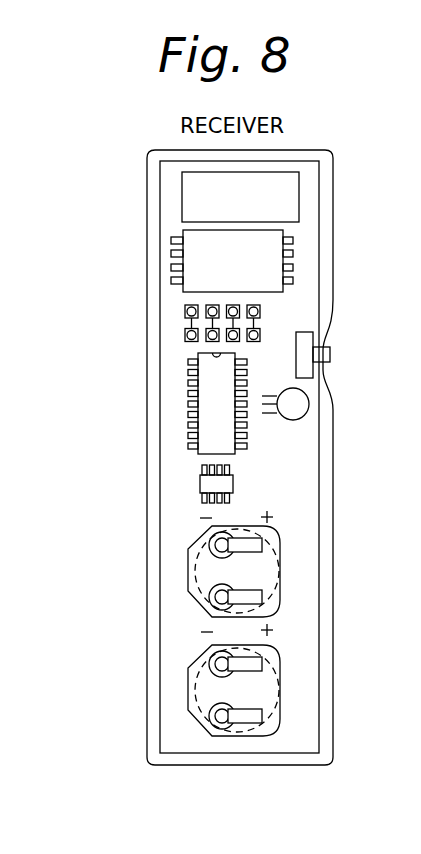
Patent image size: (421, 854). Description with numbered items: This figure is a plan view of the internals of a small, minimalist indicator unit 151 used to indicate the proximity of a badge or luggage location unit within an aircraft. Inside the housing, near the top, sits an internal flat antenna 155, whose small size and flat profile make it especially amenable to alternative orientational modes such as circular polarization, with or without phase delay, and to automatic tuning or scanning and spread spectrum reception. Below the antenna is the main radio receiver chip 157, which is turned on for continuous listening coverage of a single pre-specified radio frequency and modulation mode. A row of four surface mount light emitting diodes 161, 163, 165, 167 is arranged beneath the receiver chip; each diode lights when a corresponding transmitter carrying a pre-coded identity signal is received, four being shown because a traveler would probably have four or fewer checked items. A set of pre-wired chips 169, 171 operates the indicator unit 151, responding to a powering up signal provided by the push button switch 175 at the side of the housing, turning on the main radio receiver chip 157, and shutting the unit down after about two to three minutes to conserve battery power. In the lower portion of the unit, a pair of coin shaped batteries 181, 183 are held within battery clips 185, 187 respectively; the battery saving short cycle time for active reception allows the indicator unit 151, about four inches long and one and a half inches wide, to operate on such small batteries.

The indicator unit 151 is at (133, 674).
The internal flat antenna 155 is at (299, 194).
The main radio receiver chip 157 is at (293, 248).
The surface mount light emitting diode 161 is at (185, 335).
The surface mount light emitting diode 163 is at (213, 342).
The surface mount light emitting diode 165 is at (262, 334).
The surface mount light emitting diode 167 is at (262, 311).
The pre-wired chip 169 is at (226, 482).
The pre-wired chip 171 is at (223, 429).
The push button switch 175 is at (324, 368).
The coin shaped battery 181 is at (272, 572).
The coin shaped battery 183 is at (272, 690).
The battery clip 185 is at (262, 545).
The battery clip 187 is at (262, 663).